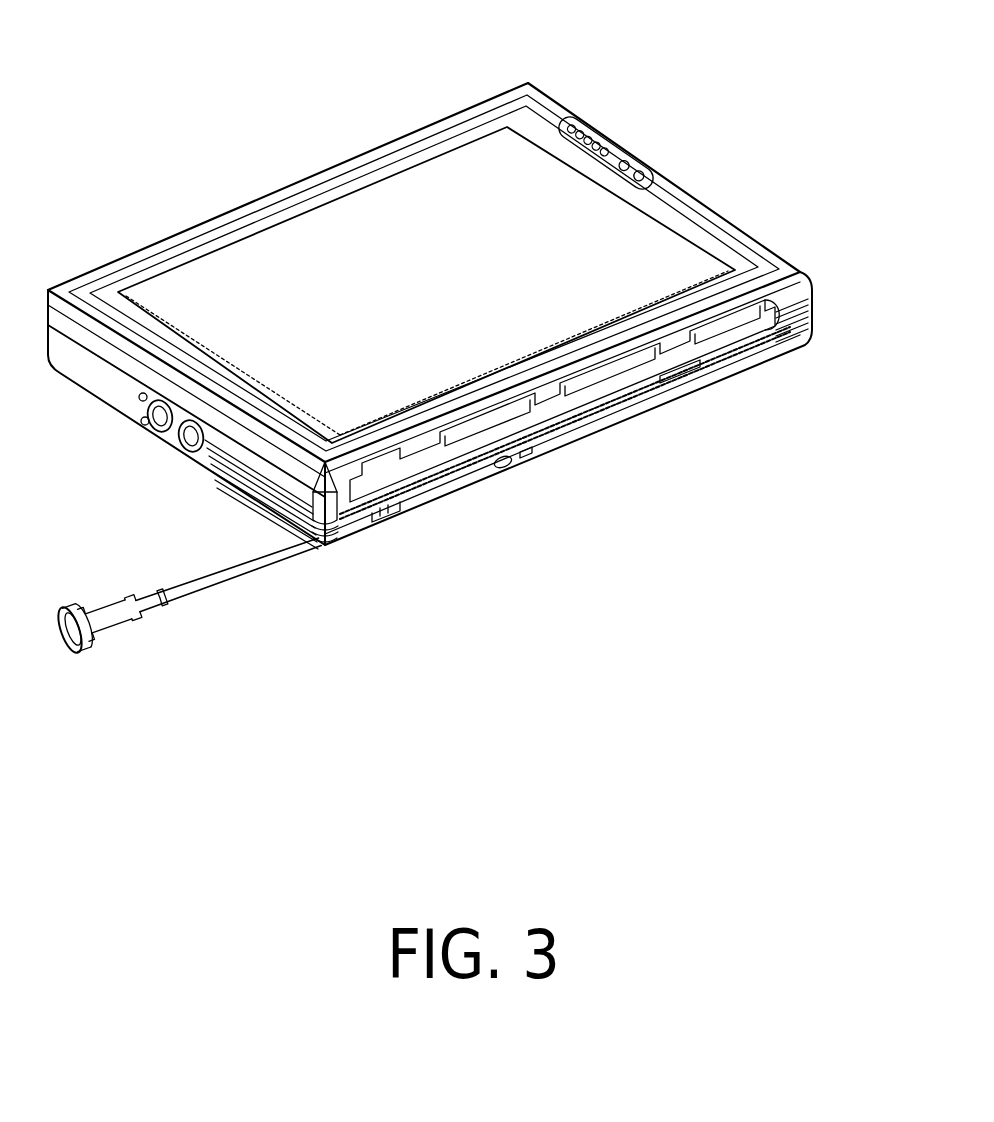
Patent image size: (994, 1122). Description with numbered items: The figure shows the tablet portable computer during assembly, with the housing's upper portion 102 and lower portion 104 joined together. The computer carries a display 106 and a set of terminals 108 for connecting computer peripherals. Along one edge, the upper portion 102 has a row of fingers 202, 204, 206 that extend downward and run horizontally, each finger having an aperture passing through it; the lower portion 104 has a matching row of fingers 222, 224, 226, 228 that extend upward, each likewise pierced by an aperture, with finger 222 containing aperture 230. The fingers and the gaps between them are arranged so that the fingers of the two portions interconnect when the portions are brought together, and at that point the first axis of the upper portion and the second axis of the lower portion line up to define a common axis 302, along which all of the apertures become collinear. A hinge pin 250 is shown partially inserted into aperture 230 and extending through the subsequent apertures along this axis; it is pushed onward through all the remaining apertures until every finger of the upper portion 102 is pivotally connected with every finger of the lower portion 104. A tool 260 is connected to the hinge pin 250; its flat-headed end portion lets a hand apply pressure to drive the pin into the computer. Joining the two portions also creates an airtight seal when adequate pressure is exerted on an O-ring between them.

The upper portion 102 is at (692, 183).
The lower portion 104 is at (802, 347).
The display 106 is at (383, 200).
The set of terminals 108 is at (155, 432).
The finger 202 is at (420, 467).
The finger 204 is at (523, 433).
The finger 206 is at (727, 347).
The finger 222 is at (397, 510).
The finger 224 is at (497, 472).
The finger 226 is at (585, 405).
The finger 228 is at (703, 380).
The aperture 230 is at (347, 533).
The hinge pin 250 is at (185, 656).
The tool 260 is at (95, 660).
The common axis 302 is at (273, 545).